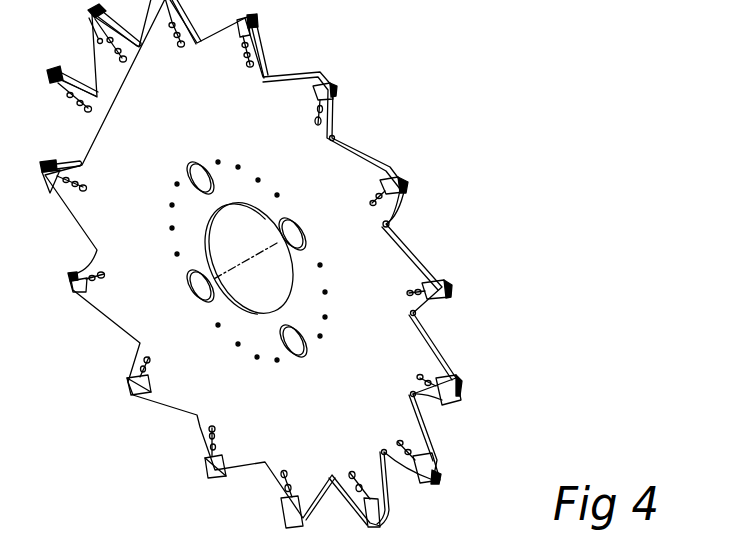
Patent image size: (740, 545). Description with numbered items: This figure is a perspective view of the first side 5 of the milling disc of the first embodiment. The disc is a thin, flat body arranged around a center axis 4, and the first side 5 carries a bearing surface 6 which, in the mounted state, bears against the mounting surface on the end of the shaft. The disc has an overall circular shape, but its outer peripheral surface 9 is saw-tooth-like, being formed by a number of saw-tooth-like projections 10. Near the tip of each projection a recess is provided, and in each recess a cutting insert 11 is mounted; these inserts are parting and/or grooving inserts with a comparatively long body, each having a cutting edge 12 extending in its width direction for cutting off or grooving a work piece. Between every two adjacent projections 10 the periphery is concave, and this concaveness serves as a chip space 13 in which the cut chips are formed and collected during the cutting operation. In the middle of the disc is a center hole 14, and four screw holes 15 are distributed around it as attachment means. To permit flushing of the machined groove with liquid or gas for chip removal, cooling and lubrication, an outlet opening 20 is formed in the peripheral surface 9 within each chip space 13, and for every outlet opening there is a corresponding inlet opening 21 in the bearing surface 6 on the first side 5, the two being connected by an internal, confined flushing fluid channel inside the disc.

The center axis 4 is at (242, 266).
The first side 5 is at (128, 292).
The bearing surface 6 is at (186, 229).
The outer peripheral surface 9 is at (438, 351).
The saw-tooth-like projections 10 is at (420, 270).
The cutting insert 11 is at (446, 393).
The cutting edge 12 is at (458, 406).
The chip space 13 is at (372, 117).
The center hole 14 is at (253, 224).
The screw holes 15 is at (298, 347).
The outlet opening 20 is at (398, 226).
The inlet opening 21 is at (257, 357).